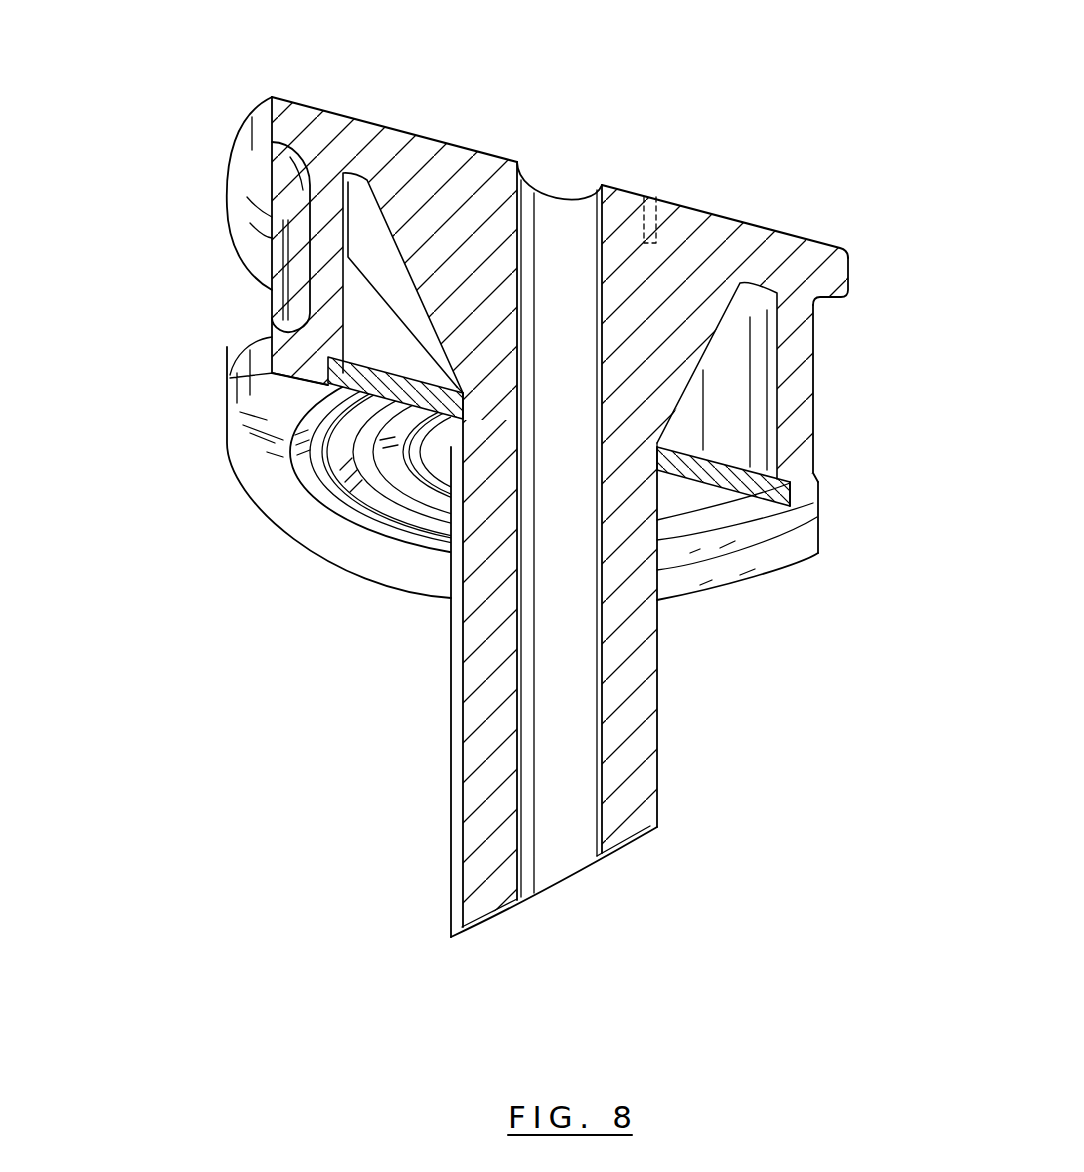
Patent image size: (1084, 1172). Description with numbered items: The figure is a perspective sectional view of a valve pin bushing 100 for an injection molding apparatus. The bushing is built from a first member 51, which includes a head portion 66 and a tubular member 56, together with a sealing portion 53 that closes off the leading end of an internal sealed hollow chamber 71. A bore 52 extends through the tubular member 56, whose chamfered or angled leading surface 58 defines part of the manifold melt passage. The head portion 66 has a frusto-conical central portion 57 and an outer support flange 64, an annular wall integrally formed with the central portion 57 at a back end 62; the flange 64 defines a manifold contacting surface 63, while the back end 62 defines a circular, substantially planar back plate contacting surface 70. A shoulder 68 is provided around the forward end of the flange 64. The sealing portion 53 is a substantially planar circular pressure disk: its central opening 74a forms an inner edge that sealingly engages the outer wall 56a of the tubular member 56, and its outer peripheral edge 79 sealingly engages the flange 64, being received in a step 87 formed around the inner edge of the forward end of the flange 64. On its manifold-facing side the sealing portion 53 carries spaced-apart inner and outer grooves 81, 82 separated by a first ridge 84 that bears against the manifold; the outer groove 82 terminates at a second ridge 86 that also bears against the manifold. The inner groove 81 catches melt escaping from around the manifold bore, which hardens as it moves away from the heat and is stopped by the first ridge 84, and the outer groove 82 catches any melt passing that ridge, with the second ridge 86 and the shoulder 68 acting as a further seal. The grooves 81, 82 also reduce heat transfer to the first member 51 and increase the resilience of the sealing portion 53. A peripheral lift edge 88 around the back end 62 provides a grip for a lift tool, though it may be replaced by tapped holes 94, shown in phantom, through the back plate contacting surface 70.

The first member 51 is at (760, 250).
The bore 52 is at (580, 683).
The sealing portion 53 is at (338, 460).
The tubular member 56 is at (636, 622).
The outer wall 56a is at (462, 393).
The central portion 57 is at (812, 283).
The leading surface 58 is at (613, 857).
The back end 62 is at (417, 147).
The manifold contacting surface 63 is at (762, 563).
The outer support flange 64 is at (812, 350).
The head portion 66 is at (140, 93).
The shoulder 68 is at (280, 353).
The back plate contacting surface 70 is at (337, 110).
The chamber 71 is at (350, 298).
The central opening 74a is at (468, 405).
The outer peripheral edge 79 is at (803, 502).
The inner groove 81 is at (440, 460).
The outer groove 82 is at (333, 427).
The first ridge 84 is at (413, 500).
The second ridge 86 is at (343, 523).
The step 87 is at (785, 478).
The peripheral lift edge 88 is at (263, 127).
The tapped holes 94 is at (650, 197).
The valve pin bushing 100 is at (635, 100).